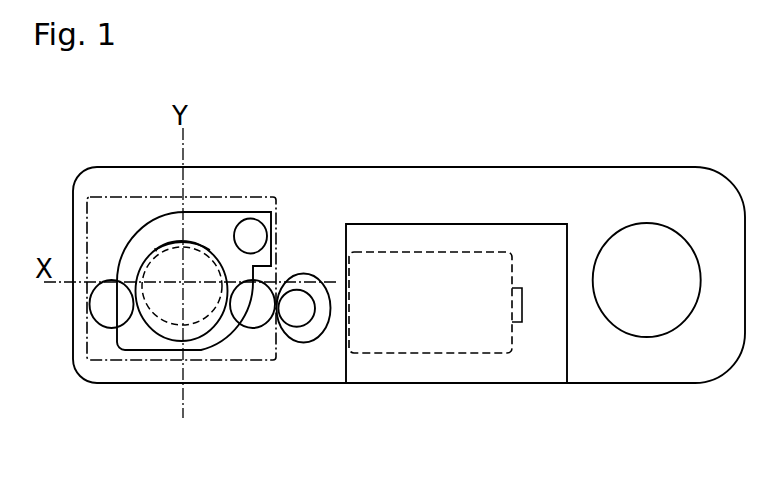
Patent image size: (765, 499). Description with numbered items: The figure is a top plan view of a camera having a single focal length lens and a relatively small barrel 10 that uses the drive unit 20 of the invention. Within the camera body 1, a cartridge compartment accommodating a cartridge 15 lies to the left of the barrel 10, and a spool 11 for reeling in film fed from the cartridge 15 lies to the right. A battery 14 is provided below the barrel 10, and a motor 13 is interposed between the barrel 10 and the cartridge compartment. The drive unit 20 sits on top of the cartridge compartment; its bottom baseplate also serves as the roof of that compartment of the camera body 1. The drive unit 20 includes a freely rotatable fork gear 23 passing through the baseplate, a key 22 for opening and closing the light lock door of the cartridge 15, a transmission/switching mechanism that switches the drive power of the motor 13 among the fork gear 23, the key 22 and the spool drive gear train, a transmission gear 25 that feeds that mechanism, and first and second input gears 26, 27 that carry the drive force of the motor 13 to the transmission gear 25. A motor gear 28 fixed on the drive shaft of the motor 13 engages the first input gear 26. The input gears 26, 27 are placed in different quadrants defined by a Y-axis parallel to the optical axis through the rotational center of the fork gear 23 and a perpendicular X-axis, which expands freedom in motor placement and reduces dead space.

The camera body 1 is at (510, 164).
The barrel 10 is at (538, 238).
The spool 11 is at (662, 243).
The motor 13 is at (312, 330).
The battery 14 is at (397, 256).
The cartridge 15 is at (205, 217).
The drive unit 20 is at (113, 205).
The key 22 is at (252, 227).
The fork gear 23 is at (167, 242).
The transmission gear 25 is at (192, 332).
The first input gear 26 is at (253, 320).
The second input gear 27 is at (104, 322).
The motor gear 28 is at (297, 317).